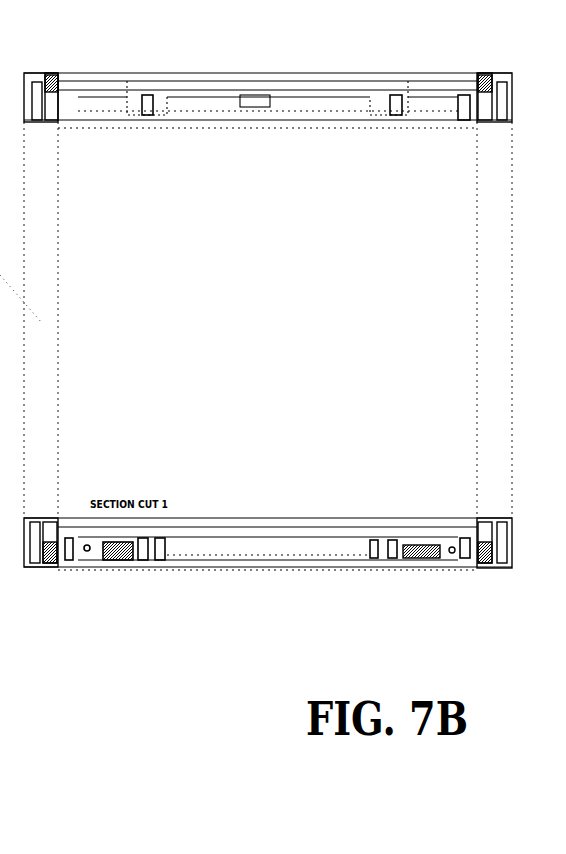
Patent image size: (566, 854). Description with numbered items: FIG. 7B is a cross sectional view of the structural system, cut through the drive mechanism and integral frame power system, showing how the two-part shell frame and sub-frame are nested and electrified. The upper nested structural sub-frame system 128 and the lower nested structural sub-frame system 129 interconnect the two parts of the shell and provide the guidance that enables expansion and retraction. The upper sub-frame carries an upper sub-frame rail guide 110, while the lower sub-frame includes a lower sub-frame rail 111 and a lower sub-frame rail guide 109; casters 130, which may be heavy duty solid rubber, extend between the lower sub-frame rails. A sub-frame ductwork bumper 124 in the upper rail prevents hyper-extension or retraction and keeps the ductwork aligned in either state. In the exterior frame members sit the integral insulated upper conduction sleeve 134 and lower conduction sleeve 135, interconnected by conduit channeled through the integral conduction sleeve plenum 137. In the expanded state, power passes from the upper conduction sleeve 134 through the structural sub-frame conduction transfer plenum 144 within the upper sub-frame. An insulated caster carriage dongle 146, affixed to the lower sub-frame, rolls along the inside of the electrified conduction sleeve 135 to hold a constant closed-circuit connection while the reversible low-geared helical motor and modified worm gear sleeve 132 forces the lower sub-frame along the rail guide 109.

The lower sub-frame rail guide 109 is at (400, 565).
The upper sub-frame rail guide 110 is at (142, 96).
The lower sub-frame rail 111 is at (396, 563).
The sub-frame ductwork bumper 124 is at (396, 94).
The upper nested structural sub-frame system 128 is at (463, 120).
The lower nested structural sub-frame system 129 is at (469, 540).
The caster 130 is at (333, 572).
The reversible low-geared helical motor and modified worm gear sleeve 132 is at (463, 542).
The integral insulated upper conduction sleeve 134 is at (480, 73).
The integral insulated lower conduction sleeve 135 is at (502, 567).
The integral conduction sleeve plenum 137 is at (512, 568).
The structural sub-frame conduction transfer plenum 144 is at (60, 567).
The insulated caster carriage dongle 146 is at (57, 572).